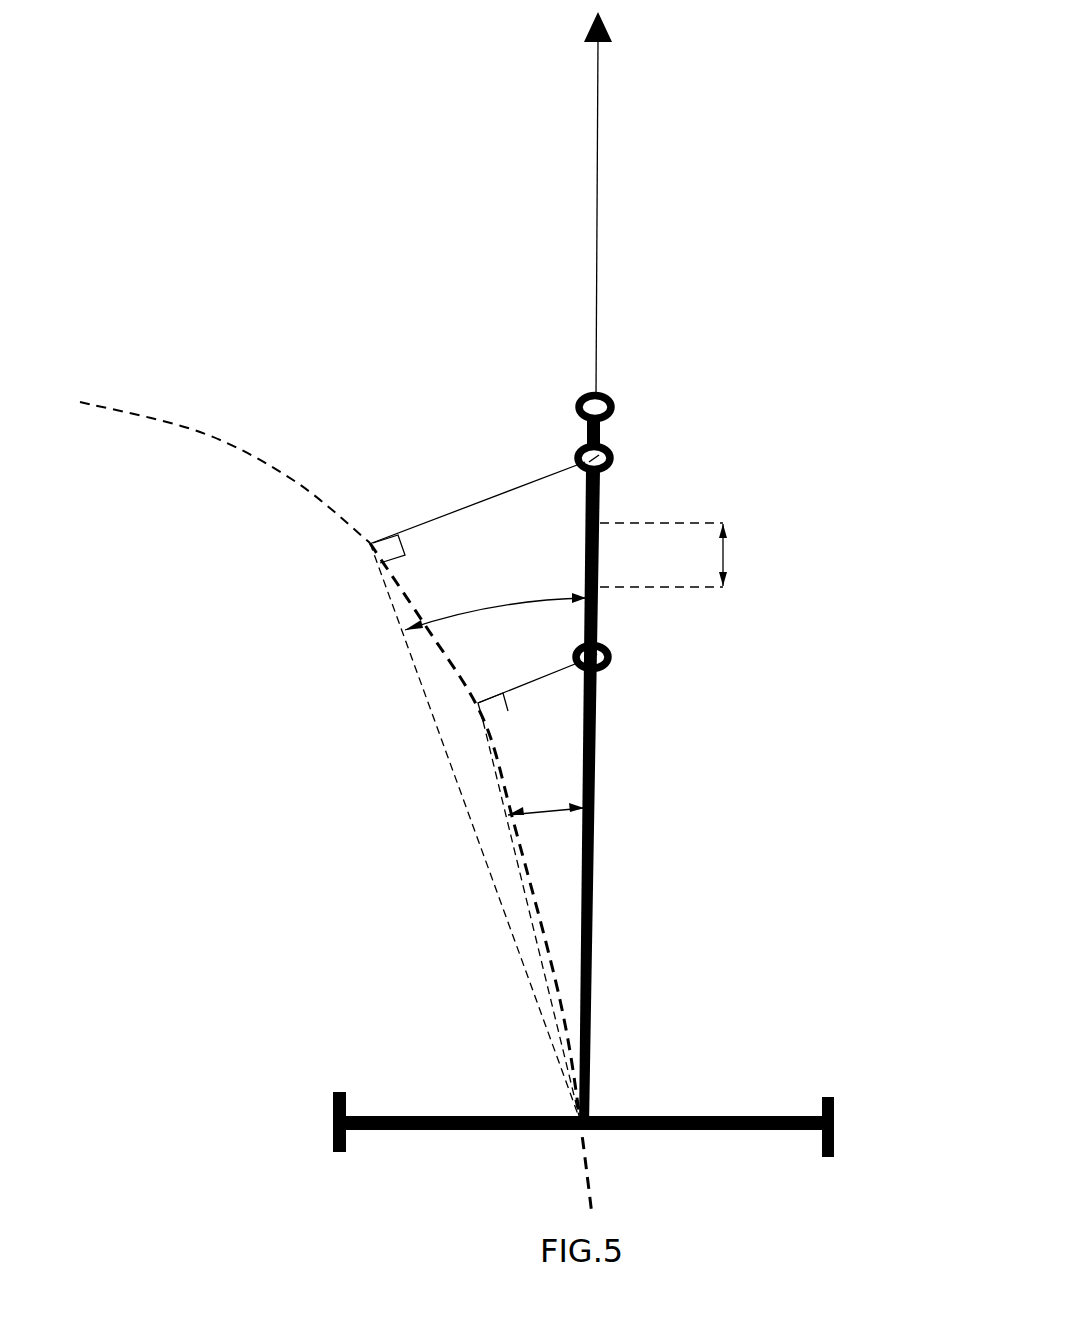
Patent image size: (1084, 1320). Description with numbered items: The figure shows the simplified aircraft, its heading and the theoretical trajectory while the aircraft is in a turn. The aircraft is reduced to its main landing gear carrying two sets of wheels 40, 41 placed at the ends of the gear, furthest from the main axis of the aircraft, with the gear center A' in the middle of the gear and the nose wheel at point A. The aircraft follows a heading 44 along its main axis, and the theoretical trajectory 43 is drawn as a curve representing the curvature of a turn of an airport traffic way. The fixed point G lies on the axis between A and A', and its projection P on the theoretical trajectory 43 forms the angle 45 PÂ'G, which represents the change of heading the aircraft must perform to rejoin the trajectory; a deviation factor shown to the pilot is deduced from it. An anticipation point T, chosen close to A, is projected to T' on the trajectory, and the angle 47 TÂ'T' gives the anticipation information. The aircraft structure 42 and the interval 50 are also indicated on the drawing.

The wheel 40 is at (333, 1100).
The wheel 41 is at (834, 1113).
The mast / aircraft structure 42 is at (742, 901).
The theoretical trajectory 43 is at (200, 432).
The heading 44 is at (598, 168).
The angle PÂ'G 45 is at (544, 810).
The angle TÂ'T' 47 is at (495, 607).
The height interval 50 is at (724, 557).